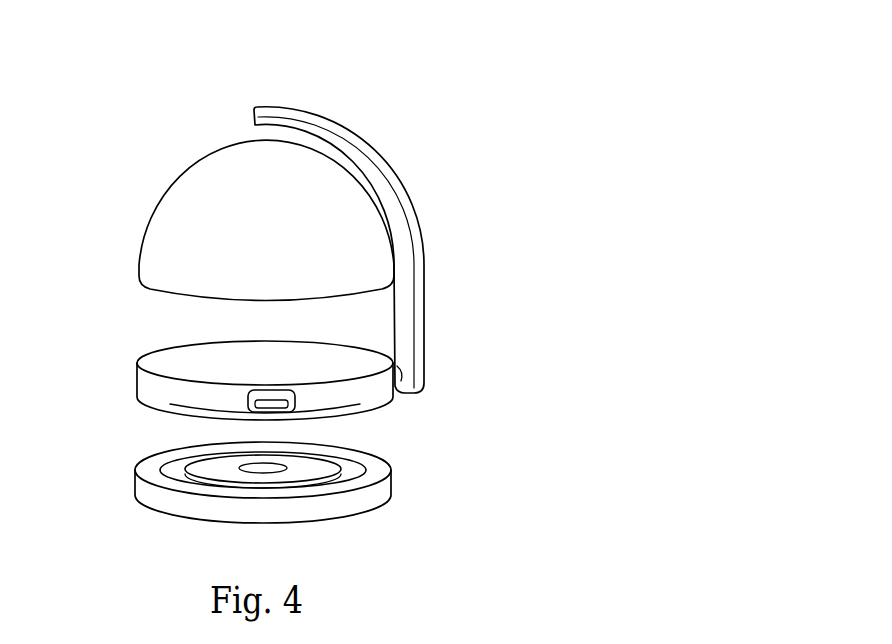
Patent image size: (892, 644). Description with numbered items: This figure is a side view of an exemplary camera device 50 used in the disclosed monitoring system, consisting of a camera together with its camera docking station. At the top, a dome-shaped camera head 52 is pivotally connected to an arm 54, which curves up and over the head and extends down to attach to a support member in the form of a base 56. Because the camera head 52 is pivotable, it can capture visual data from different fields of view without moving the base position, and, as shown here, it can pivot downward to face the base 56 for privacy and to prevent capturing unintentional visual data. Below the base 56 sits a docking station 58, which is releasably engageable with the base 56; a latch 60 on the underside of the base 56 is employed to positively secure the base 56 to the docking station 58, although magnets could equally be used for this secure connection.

The camera device 50 is at (487, 112).
The camera head 52 is at (175, 203).
The arm 54 is at (402, 285).
The base 56 is at (140, 383).
The docking station 58 is at (146, 493).
The latch 60 is at (290, 410).